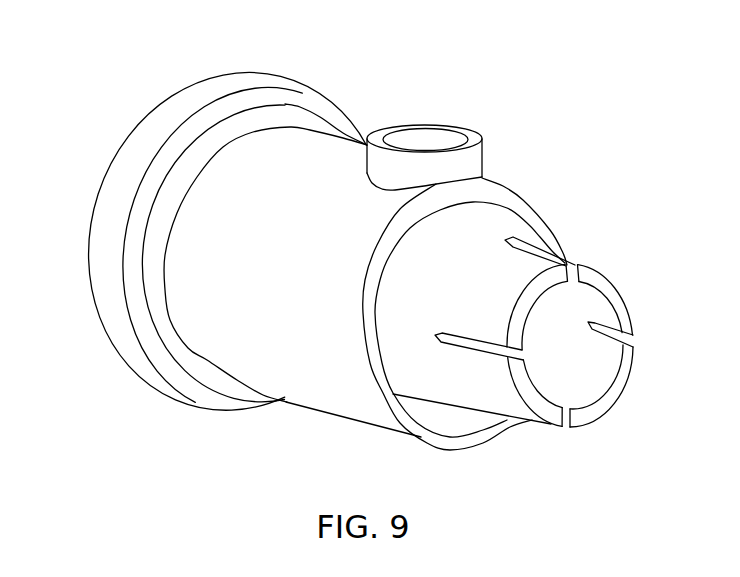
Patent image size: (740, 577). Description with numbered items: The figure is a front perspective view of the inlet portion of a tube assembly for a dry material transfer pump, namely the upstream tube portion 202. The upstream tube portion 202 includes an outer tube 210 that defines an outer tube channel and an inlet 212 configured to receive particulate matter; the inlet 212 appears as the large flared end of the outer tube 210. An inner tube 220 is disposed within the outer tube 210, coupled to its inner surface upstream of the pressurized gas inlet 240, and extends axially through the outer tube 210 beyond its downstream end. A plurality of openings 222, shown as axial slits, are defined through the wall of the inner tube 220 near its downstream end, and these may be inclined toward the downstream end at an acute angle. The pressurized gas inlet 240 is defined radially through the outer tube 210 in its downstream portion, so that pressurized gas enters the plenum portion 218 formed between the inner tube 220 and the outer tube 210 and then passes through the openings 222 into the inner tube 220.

The upstream tube portion 202 is at (231, 68).
The inlet 212 is at (150, 143).
The outer tube 210 is at (333, 152).
The pressurized gas inlet 240 is at (443, 140).
The plenum portion 218 is at (413, 405).
The inner tube 220 is at (513, 408).
The openings 222 is at (555, 258).